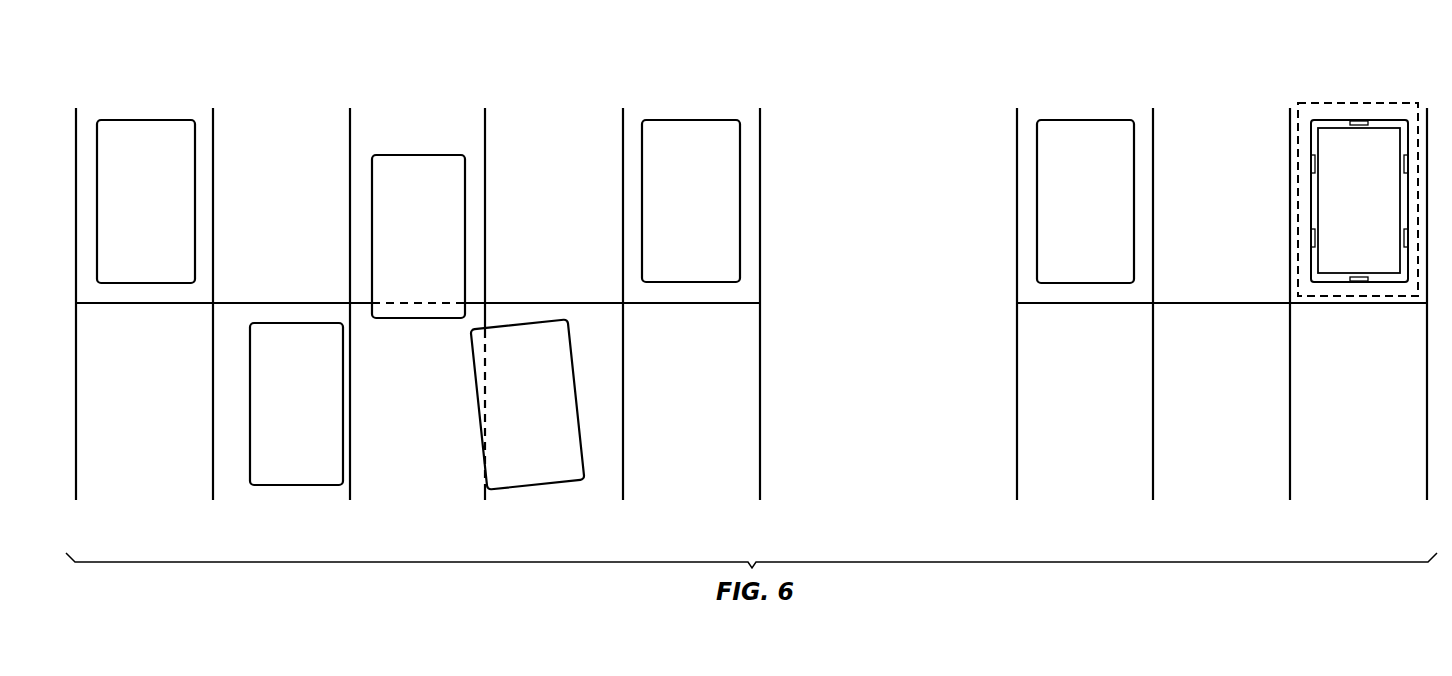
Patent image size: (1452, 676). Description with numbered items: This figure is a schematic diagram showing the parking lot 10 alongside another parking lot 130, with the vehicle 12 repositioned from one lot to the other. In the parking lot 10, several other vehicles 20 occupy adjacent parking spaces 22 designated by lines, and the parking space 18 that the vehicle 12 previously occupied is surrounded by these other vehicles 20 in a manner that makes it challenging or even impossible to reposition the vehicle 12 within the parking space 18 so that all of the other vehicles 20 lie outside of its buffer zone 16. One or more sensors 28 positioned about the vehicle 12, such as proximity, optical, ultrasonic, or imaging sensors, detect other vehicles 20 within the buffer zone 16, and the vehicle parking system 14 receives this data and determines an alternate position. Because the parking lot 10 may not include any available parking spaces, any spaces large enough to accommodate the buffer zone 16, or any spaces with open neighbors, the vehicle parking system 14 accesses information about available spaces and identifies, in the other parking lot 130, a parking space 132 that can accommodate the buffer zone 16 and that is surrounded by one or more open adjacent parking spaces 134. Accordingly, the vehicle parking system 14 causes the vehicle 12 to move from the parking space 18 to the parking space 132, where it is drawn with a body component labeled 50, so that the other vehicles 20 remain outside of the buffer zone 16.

The parking lot 10 is at (242, 50).
The vehicle 12 is at (1393, 283).
The vehicle parking system 14 is at (1313, 68).
The buffer zone 16 is at (1366, 104).
The parking space 18 is at (426, 410).
The other vehicles 20 is at (148, 120).
The adjacent parking spaces 22 is at (383, 139).
The sensors 28 is at (1362, 283).
The vehicle body 50 is at (1317, 143).
The other parking lot 130 is at (1095, 50).
The parking space 132 is at (1306, 299).
The open adjacent parking spaces 134 is at (1232, 217).